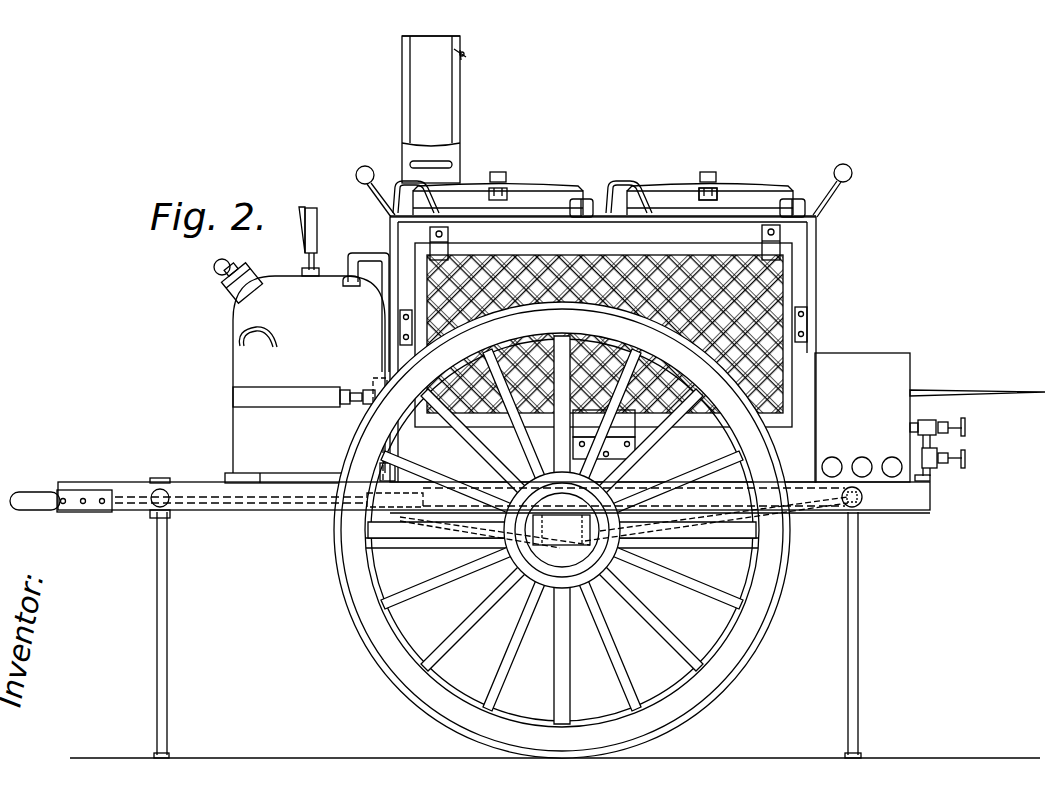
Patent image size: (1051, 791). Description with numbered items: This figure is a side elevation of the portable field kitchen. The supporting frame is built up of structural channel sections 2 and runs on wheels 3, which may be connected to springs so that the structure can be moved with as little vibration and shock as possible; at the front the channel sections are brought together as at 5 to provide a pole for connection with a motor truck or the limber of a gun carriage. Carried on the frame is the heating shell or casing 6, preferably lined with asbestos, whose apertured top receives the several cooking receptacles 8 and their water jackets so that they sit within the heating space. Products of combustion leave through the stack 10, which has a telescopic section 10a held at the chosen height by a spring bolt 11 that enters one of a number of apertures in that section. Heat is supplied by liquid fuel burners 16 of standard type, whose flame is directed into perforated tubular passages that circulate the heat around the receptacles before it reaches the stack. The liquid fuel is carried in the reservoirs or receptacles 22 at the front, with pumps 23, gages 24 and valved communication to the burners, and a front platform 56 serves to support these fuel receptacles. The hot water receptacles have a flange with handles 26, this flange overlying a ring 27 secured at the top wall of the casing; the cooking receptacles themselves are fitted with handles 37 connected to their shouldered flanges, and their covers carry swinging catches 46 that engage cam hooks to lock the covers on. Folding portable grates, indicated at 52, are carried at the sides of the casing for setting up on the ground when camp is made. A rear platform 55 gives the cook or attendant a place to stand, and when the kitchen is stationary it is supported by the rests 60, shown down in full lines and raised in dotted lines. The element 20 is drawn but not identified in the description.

The channel sections 2 is at (494, 515).
The wheels 3 is at (562, 530).
The pole 5 is at (61, 487).
The heating shell or casing 6 is at (805, 292).
The cooking receptacles 8 is at (603, 194).
The stack 10 is at (461, 128).
The telescopic section 10a is at (433, 46).
The spring bolt 11 is at (468, 56).
The liquid fuel burners 16 is at (937, 443).
The rod 20 is at (977, 385).
The reservoirs or receptacles 22 is at (307, 368).
The pumps 23 is at (249, 276).
The gages 24 is at (323, 241).
The handles 26 is at (604, 190).
The ring 27 is at (652, 218).
The handles 37 is at (414, 209).
The swinging catches 46 is at (713, 195).
The folding portable grates 52 is at (609, 257).
The platform 55 is at (931, 478).
The platform 56 is at (278, 483).
The rests 60 is at (518, 618).